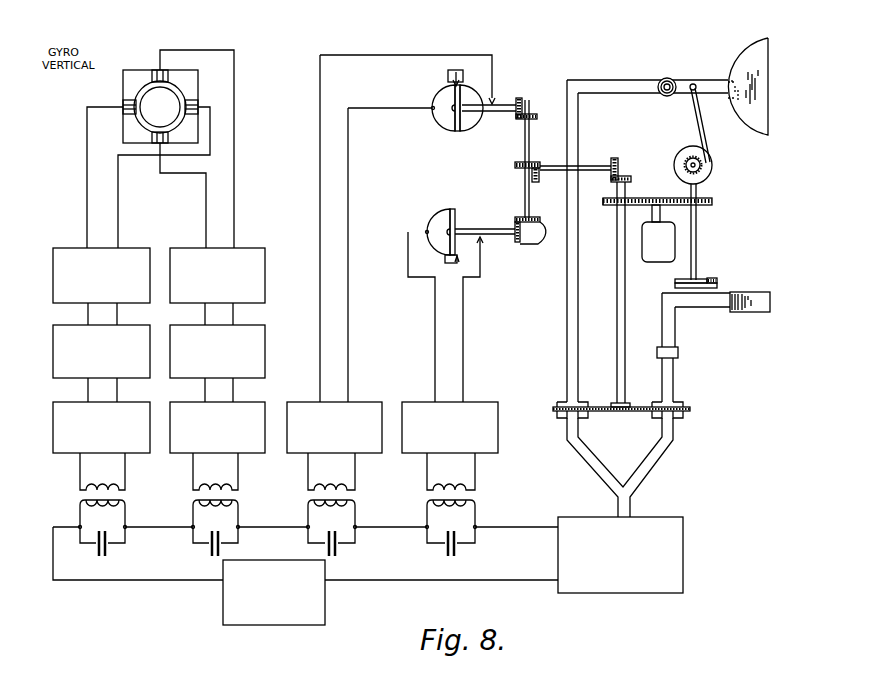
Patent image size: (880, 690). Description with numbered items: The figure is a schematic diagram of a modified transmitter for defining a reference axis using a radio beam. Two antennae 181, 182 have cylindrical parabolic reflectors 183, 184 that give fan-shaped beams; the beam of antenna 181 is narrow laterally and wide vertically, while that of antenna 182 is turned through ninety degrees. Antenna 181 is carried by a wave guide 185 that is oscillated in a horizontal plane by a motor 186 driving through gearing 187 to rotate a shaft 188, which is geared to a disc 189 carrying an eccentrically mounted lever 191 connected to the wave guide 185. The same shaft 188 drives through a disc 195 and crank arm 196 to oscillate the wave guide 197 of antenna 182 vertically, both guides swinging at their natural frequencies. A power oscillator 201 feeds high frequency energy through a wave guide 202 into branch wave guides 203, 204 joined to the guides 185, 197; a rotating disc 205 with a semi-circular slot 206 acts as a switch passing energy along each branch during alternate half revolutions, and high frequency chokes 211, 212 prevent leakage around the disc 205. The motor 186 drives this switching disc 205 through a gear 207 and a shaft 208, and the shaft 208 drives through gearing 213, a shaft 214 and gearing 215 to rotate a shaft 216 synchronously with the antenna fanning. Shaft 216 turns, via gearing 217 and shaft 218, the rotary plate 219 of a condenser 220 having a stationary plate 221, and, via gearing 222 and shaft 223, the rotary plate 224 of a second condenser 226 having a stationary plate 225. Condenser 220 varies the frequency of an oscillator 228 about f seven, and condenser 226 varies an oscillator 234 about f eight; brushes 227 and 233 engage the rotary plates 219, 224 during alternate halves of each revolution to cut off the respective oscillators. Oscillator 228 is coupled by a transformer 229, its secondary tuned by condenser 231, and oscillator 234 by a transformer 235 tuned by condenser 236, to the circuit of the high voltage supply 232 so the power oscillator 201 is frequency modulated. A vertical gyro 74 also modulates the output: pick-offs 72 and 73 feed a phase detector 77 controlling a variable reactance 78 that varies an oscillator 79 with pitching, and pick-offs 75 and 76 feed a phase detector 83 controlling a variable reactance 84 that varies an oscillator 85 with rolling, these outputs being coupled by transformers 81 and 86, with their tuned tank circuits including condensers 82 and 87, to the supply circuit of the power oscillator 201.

The pick-off 72 is at (158, 70).
The pick-off 73 is at (157, 144).
The vertical gyro 74 is at (196, 80).
The pick-off 75 is at (196, 112).
The pick-off 76 is at (123, 100).
The phase detector 77 is at (265, 260).
The variable reactance 78 is at (265, 342).
The oscillator 79 is at (265, 402).
The transformer 81 is at (238, 490).
The tuned circuit capacitor 82 is at (210, 547).
The phase detector 83 is at (53, 276).
The variable reactance 84 is at (53, 362).
The oscillator 85 is at (53, 444).
The transformer 86 is at (125, 490).
The tuned circuit capacitor 87 is at (106, 548).
The antenna 181 is at (740, 76).
The antenna 182 is at (734, 313).
The cylindrical parabolic reflector 183 is at (770, 46).
The cylindrical parabolic reflector 184 is at (770, 312).
The wave guide 185 is at (682, 80).
The motor 186 is at (650, 254).
The gearing 187 is at (675, 198).
The shaft 188 is at (697, 242).
The disc 189 is at (712, 166).
The lever 191 is at (698, 122).
The disc 195 is at (706, 282).
The crank arm 196 is at (718, 289).
The wave guide 197 is at (695, 308).
The power oscillator 201 is at (683, 586).
The wave guide 202 is at (630, 505).
The branch wave guide 203 is at (590, 463).
The branch wave guide 204 is at (668, 462).
The disc 205 is at (610, 412).
The semi-circular slot 206 is at (683, 402).
The gear 207 is at (604, 206).
The shaft 208 is at (567, 342).
The high frequency choke 211 is at (553, 414).
The high frequency choke 212 is at (690, 412).
The gearing 213 is at (627, 178).
The shaft 214 is at (583, 166).
The gearing 215 is at (520, 168).
The shaft 216 is at (525, 150).
The gearing 217 is at (526, 100).
The shaft 218 is at (499, 113).
The rotary plate 219 is at (462, 133).
The condenser 220 is at (436, 82).
The stationary plate 221 is at (441, 112).
The gearing 222 is at (538, 245).
The shaft 223 is at (496, 219).
The rotary plate 224 is at (456, 214).
The stationary plate 225 is at (429, 226).
The second condenser 226 is at (451, 206).
The brush 227 is at (458, 70).
The oscillator 228 is at (378, 393).
The transformer 229 is at (355, 490).
The condenser 231 is at (340, 548).
The high voltage supply 232 is at (318, 623).
The brush 233 is at (460, 259).
The oscillator 234 is at (495, 404).
The transformer 235 is at (475, 490).
The condenser 236 is at (458, 548).